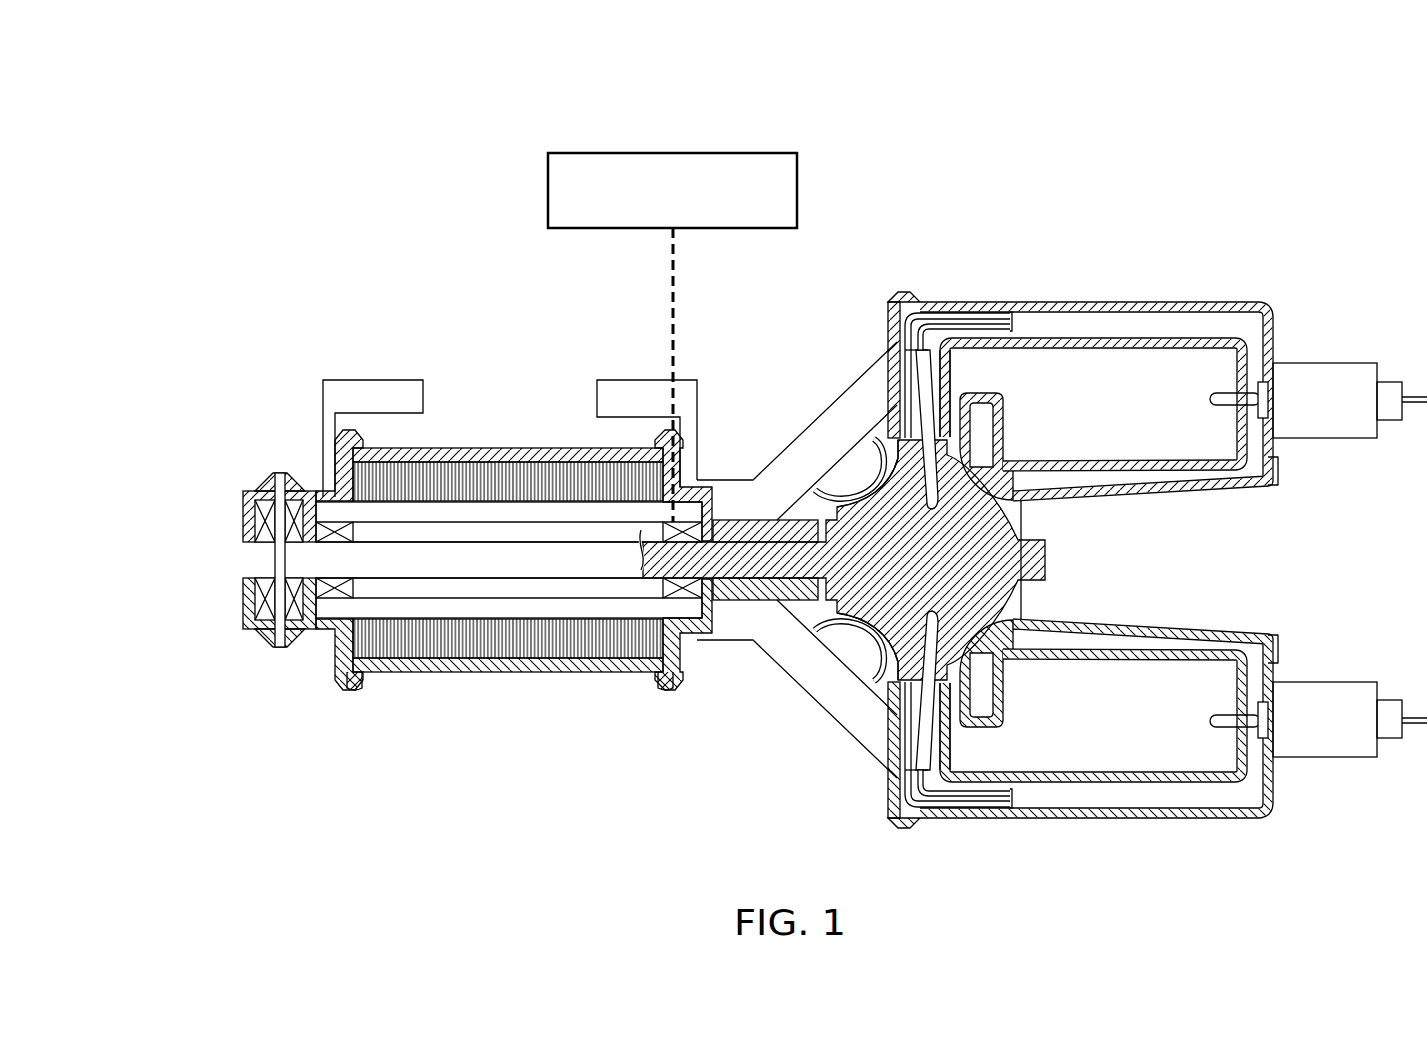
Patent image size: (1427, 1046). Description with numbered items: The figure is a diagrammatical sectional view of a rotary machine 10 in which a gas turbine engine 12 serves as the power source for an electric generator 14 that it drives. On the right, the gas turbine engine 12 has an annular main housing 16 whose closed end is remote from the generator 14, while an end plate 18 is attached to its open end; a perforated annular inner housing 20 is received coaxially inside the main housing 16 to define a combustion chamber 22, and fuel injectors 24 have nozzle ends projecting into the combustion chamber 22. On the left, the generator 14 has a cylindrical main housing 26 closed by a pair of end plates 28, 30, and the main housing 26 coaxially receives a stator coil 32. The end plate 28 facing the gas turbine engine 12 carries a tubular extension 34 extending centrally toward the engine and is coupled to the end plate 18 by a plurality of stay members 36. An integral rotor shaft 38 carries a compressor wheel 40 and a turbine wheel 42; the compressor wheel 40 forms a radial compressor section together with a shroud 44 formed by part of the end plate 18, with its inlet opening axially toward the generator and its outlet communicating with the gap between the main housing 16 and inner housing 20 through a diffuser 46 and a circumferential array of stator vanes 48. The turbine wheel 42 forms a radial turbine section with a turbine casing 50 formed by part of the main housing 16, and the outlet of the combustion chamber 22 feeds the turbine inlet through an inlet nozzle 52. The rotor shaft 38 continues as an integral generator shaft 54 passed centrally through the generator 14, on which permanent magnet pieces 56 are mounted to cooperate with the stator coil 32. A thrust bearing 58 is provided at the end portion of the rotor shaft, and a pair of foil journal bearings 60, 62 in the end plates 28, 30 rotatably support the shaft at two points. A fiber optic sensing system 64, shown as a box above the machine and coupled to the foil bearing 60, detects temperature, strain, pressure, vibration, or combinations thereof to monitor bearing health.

The rotary machine 10 is at (208, 114).
The gas turbine engine 12 is at (998, 272).
The electric generator 14 is at (443, 343).
The main housing 16 is at (1232, 302).
The end plate 18 is at (893, 296).
The inner housing 20 is at (1112, 338).
The combustion chamber 22 is at (1090, 414).
The fuel injector 24 is at (1340, 365).
The main housing 26 is at (520, 665).
The end plate 28 is at (668, 690).
The end plate 30 is at (366, 690).
The stator coil 32 is at (578, 650).
The tubular extension 34 is at (732, 602).
The stay member 36 is at (800, 668).
The rotor shaft 38 is at (862, 712).
The compressor wheel 40 is at (897, 640).
The turbine wheel 42 is at (1025, 607).
The shroud 44 is at (850, 446).
The diffuser 46 is at (905, 742).
The stator vanes 48 is at (993, 800).
The turbine casing 50 is at (1030, 497).
The inlet nozzle 52 is at (955, 408).
The generator shaft 54 is at (430, 570).
The permanent magnet pieces 56 is at (497, 533).
The thrust bearing 58 is at (258, 643).
The journal bearing 60 is at (707, 468).
The journal bearing 62 is at (310, 465).
The fiber optic sensing system 64 is at (797, 188).